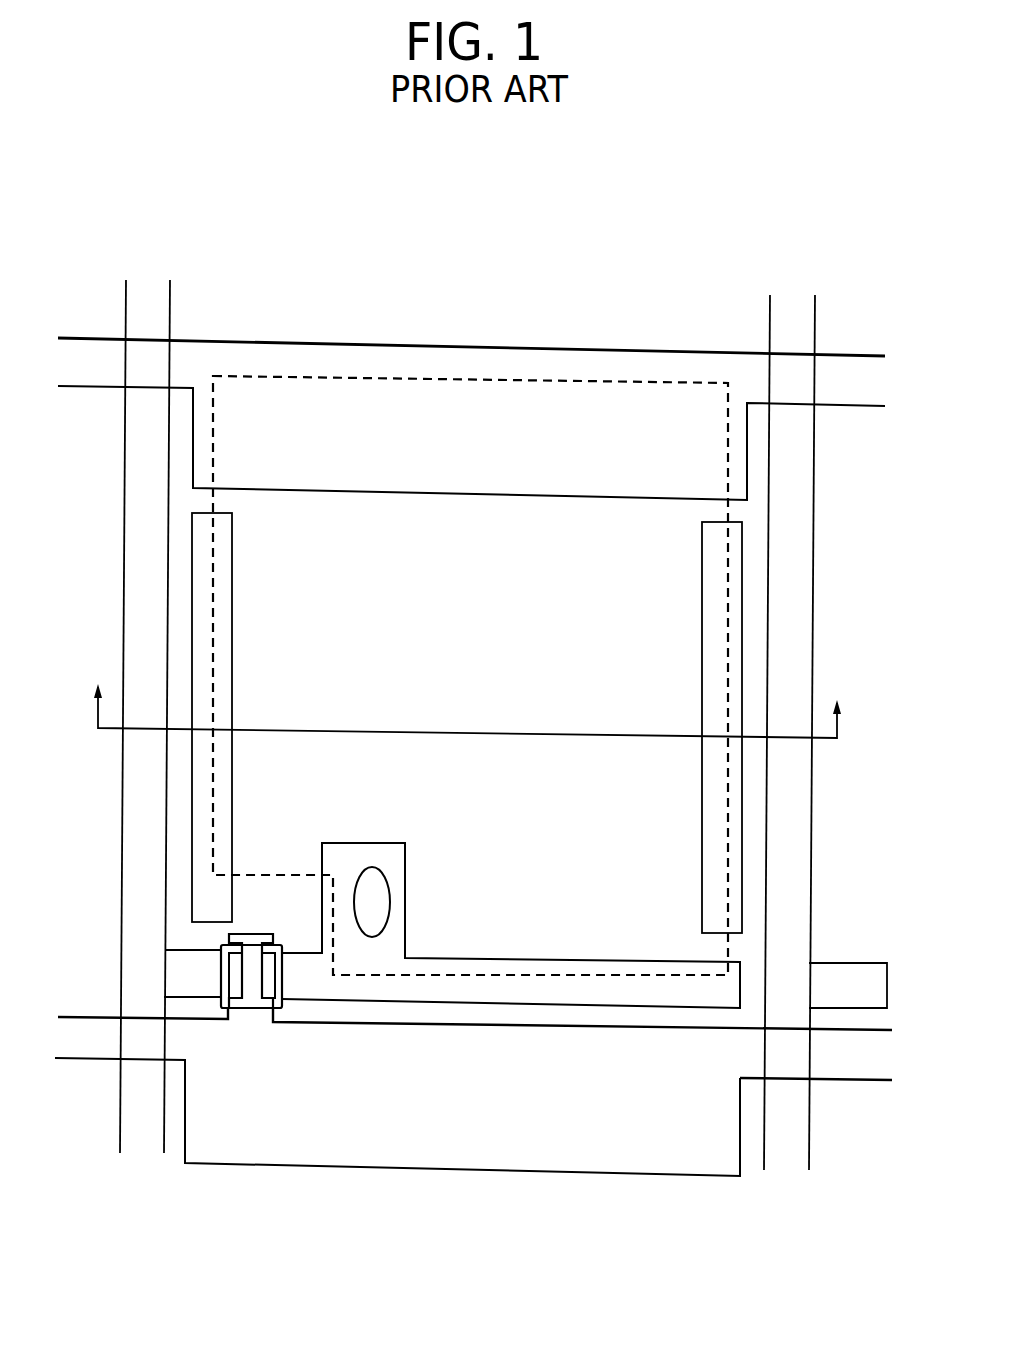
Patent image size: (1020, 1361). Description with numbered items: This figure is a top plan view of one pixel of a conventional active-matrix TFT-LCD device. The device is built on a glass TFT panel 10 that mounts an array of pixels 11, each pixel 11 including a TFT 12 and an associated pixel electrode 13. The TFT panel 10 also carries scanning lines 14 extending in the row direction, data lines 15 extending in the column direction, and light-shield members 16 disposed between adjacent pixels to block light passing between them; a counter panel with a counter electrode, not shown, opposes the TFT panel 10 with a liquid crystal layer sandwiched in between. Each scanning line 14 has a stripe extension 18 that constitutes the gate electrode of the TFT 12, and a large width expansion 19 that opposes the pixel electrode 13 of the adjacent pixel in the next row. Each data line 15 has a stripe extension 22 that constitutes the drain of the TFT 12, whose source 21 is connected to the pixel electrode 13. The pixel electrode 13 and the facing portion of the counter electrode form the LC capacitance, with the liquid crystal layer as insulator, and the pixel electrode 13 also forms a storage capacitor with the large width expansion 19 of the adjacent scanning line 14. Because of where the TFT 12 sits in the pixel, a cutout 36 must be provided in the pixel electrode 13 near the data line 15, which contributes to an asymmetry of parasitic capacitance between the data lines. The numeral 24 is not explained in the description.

The TFT panel 10 is at (661, 240).
The pixel 11 is at (521, 340).
The TFT 12 is at (249, 906).
The pixel electrode 13 is at (688, 383).
The scanning line 14 is at (848, 372).
The data line 15 is at (146, 298).
The light-shield member 16 is at (233, 563).
The stripe extension 18 is at (253, 933).
The large width expansion 19 is at (747, 447).
The source 21 is at (307, 1000).
The stripe extension 22 is at (203, 997).
The contact hole 24 is at (372, 937).
The cutout 36 is at (272, 872).